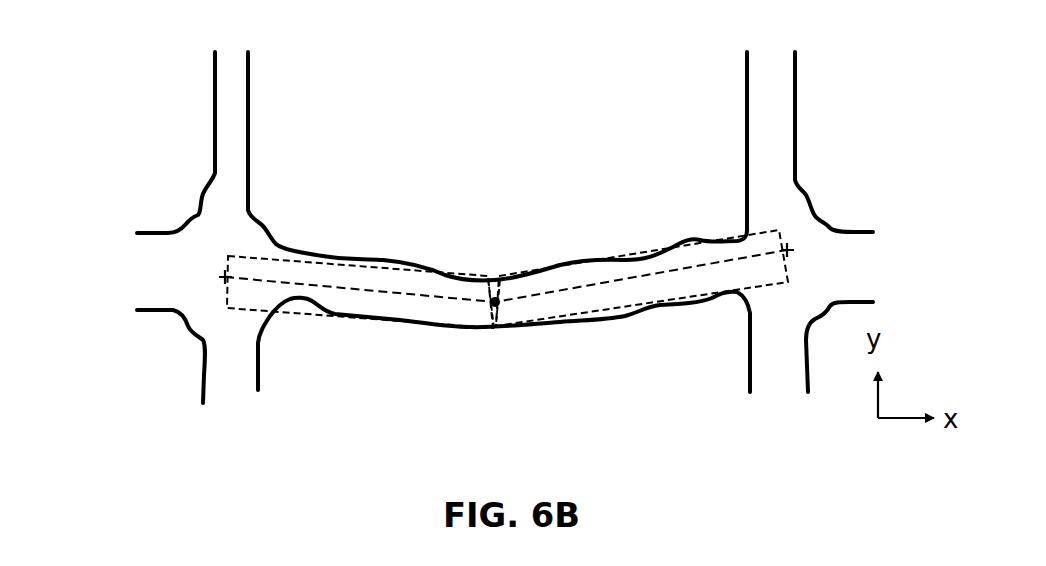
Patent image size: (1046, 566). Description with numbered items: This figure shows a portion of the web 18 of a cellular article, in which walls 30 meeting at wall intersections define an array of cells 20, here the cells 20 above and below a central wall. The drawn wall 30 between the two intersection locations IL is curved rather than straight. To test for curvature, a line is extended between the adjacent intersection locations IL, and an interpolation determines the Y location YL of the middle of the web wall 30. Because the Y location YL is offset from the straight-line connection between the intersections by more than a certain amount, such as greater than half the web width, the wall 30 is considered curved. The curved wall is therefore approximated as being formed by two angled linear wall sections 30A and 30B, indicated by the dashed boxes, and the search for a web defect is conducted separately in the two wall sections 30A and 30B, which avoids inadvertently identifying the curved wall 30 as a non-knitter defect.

The web 18 is at (182, 88).
The cells 20 is at (515, 132).
The walls 30 is at (243, 106).
The first wall section 30A is at (397, 280).
The second wall section 30B is at (552, 267).
The intersection locations IL is at (228, 280).
The Y location YL is at (485, 304).